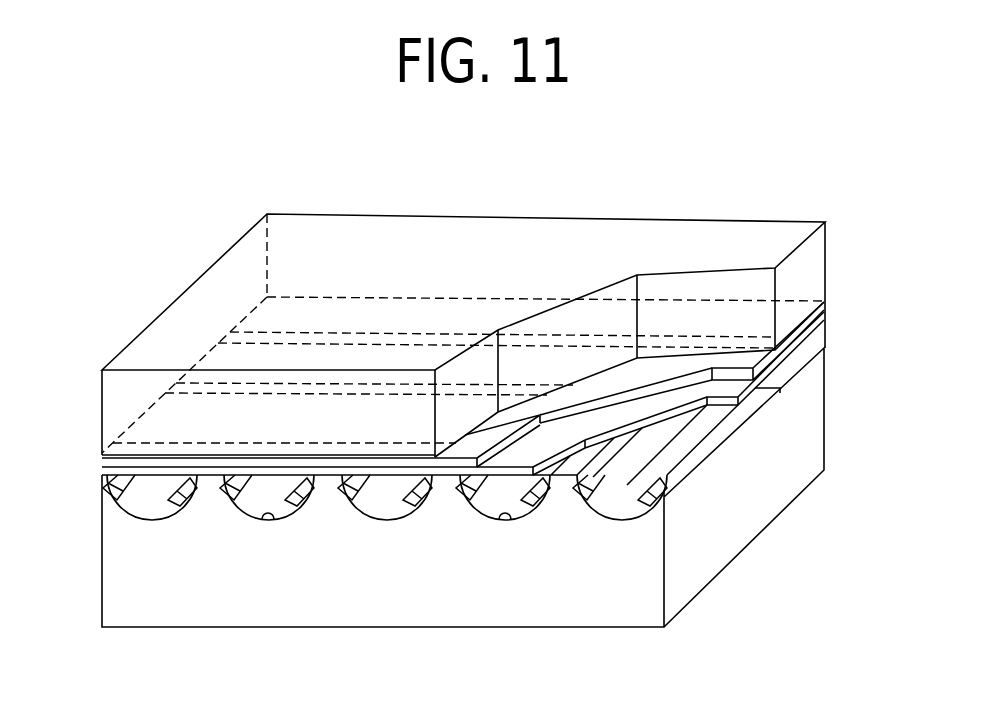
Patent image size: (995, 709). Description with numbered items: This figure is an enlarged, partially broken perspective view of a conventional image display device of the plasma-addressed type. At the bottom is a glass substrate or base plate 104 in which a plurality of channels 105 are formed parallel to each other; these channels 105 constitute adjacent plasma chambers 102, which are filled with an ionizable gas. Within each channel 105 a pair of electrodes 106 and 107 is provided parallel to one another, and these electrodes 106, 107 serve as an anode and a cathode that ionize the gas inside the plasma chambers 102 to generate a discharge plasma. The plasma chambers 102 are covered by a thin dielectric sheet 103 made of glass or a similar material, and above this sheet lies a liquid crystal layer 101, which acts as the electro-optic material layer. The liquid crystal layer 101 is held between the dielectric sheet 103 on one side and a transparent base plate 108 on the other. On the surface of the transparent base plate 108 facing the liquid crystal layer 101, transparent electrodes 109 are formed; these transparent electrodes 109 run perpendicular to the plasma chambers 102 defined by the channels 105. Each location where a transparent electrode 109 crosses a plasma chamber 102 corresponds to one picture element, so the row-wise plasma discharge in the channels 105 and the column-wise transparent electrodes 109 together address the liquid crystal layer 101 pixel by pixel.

The liquid crystal layer 101 is at (106, 458).
The plasma chambers 102 is at (393, 493).
The dielectric sheet 103 is at (106, 468).
The base plate 104 is at (807, 438).
The channels 105 is at (273, 518).
The electrode 106 is at (235, 498).
The electrode 107 is at (295, 502).
The transparent base plate 108 is at (808, 288).
The transparent electrodes 109 is at (213, 348).